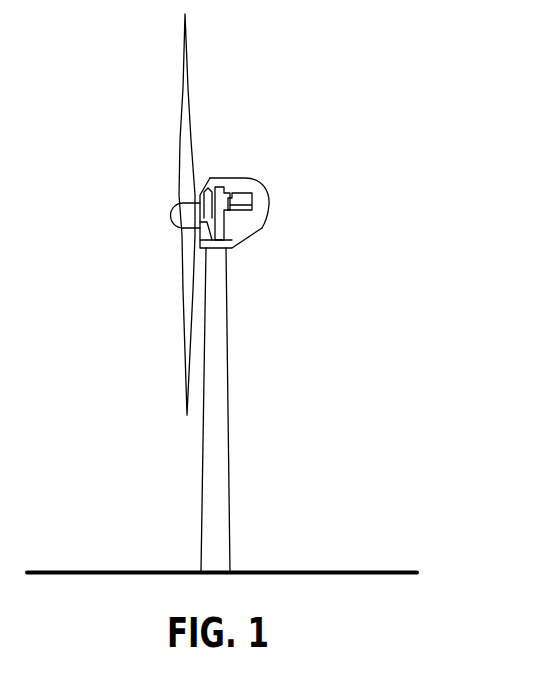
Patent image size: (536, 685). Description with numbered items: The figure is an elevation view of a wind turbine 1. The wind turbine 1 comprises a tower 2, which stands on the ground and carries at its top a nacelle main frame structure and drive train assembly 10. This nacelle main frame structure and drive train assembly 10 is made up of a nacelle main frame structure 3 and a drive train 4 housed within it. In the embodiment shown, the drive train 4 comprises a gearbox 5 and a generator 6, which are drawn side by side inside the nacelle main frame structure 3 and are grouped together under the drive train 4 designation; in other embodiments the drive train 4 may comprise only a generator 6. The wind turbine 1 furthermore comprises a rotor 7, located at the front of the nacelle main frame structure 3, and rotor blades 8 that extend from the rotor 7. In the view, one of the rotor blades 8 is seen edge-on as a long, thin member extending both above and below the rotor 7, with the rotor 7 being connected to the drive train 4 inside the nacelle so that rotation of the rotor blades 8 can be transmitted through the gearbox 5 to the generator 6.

The wind turbine 1 is at (347, 46).
The tower 2 is at (228, 447).
The nacelle main frame structure 3 is at (269, 208).
The drive train 4 is at (310, 112).
The gearbox 5 is at (208, 189).
The generator 6 is at (248, 202).
The rotor 7 is at (182, 214).
The rotor blades 8 is at (188, 88).
The nacelle main frame structure and drive train assembly 10 is at (265, 183).